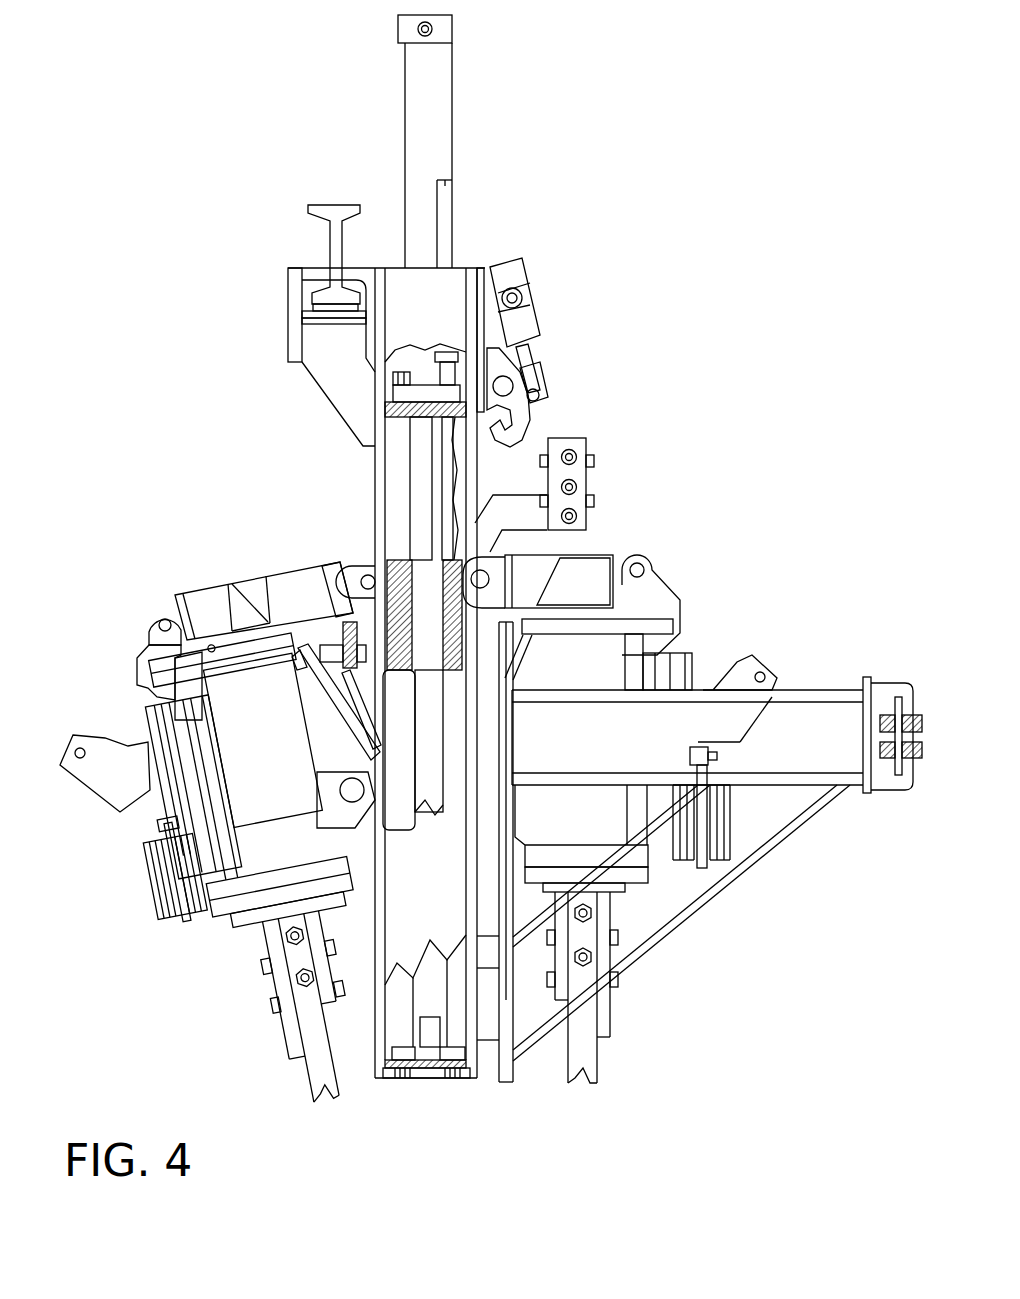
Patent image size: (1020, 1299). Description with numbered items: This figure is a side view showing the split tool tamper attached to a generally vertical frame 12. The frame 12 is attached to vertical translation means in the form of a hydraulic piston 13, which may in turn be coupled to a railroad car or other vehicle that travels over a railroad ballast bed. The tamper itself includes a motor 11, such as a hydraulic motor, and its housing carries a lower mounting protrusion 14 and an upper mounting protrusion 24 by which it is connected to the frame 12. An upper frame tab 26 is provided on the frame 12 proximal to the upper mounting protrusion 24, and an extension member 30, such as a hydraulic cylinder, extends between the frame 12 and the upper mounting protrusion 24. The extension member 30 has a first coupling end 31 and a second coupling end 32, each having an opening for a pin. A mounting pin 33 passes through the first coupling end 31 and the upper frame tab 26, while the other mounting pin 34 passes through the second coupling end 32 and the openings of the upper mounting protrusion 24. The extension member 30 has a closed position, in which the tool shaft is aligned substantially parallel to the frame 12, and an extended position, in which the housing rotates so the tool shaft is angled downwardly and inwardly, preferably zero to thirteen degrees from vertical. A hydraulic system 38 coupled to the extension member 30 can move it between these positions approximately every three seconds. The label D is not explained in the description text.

The hydraulic piston 13 is at (441, 113).
The rail D is at (332, 378).
The frame 12 is at (390, 545).
The upper frame tab 26 is at (378, 545).
The hydraulic system 38 is at (588, 487).
The extension member 30 is at (262, 600).
The mounting pin 33 is at (337, 582).
The first coupling end 31 is at (352, 573).
The mounting pin 34 is at (166, 619).
The second coupling end 32 is at (152, 612).
The upper mounting protrusion 24 is at (137, 655).
The motor 11 is at (87, 735).
The lower mounting protrusion 14 is at (327, 787).